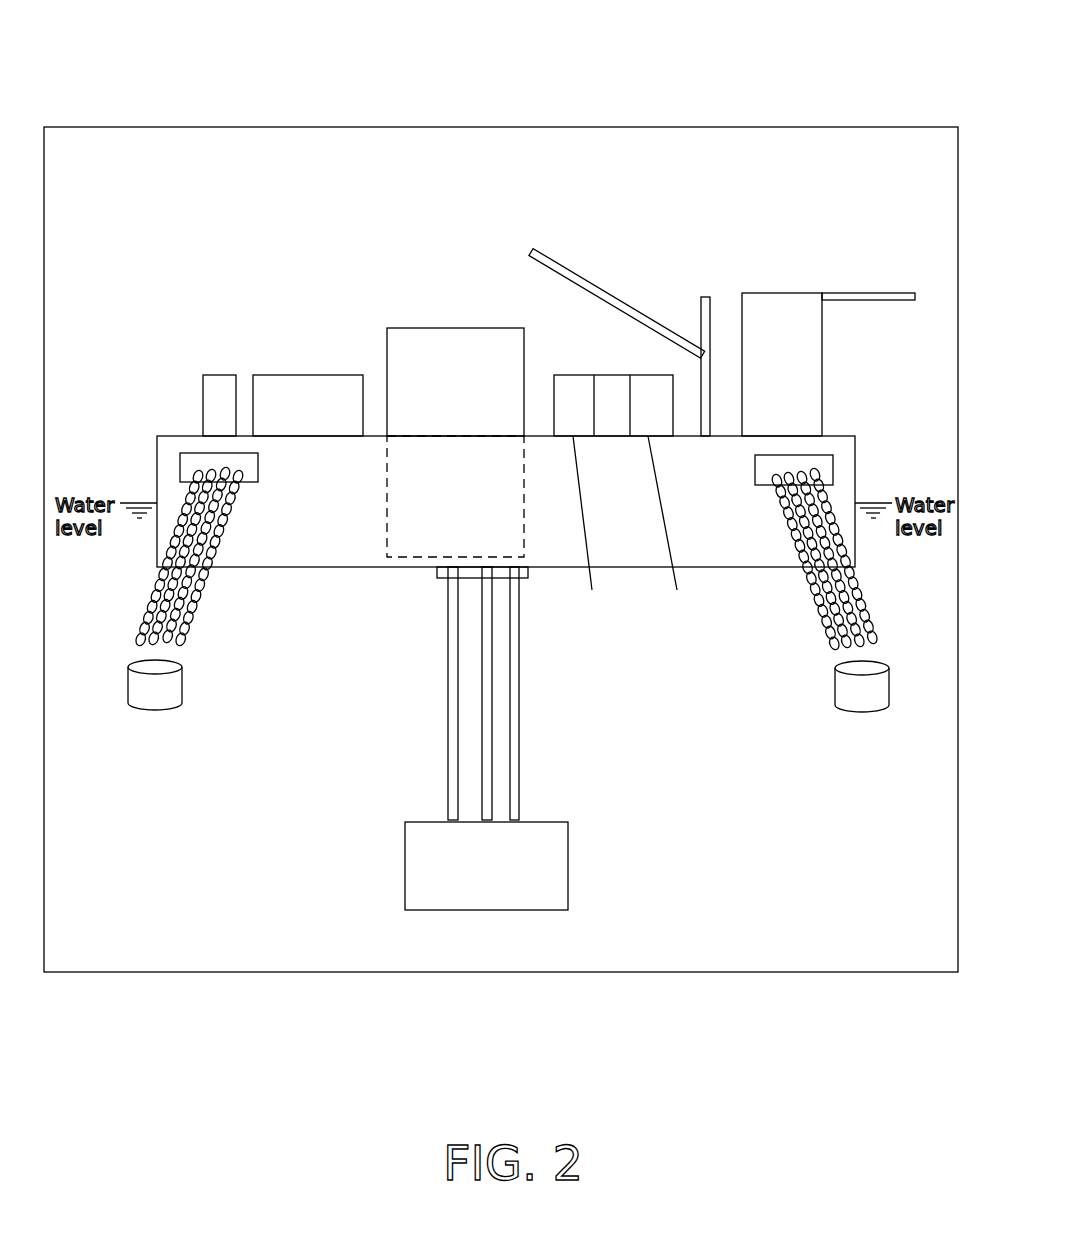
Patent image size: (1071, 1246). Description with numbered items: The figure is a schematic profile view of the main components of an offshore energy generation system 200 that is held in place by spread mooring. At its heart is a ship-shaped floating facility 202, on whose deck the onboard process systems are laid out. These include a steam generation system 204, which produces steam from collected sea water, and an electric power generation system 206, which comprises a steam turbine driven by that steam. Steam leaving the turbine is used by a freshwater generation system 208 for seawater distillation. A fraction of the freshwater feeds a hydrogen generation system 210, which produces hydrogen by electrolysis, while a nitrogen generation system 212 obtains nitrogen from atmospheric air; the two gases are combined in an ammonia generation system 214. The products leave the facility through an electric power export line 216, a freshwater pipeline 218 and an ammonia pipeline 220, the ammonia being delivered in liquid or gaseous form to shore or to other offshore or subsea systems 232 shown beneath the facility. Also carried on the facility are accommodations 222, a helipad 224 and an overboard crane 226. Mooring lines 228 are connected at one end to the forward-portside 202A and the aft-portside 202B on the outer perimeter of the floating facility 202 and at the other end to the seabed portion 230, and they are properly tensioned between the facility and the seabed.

The offshore energy generation system 200 is at (892, 60).
The floating facility 202 is at (506, 542).
The forward-portside 202A is at (164, 442).
The aft-portside 202B is at (835, 420).
The steam generation system 204 is at (308, 405).
The electric power generation system 206 is at (455, 402).
The freshwater generation system 208 is at (613, 376).
The hydrogen generation system 210 is at (177, 368).
The nitrogen generation system 212 is at (603, 541).
The ammonia generation system 214 is at (687, 540).
The electric power export line 216 is at (399, 693).
The freshwater pipeline 218 is at (416, 695).
The ammonia pipeline 220 is at (565, 693).
The accommodations 222 is at (782, 312).
The helipad 224 is at (870, 244).
The overboard crane 226 is at (619, 305).
The mooring lines 228 is at (507, 558).
The seabed portion 230 is at (508, 686).
The other offshore or subsea systems 232 is at (486, 866).